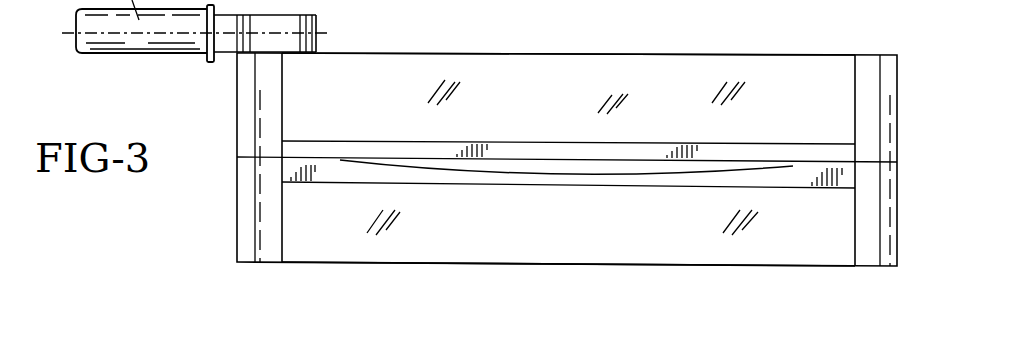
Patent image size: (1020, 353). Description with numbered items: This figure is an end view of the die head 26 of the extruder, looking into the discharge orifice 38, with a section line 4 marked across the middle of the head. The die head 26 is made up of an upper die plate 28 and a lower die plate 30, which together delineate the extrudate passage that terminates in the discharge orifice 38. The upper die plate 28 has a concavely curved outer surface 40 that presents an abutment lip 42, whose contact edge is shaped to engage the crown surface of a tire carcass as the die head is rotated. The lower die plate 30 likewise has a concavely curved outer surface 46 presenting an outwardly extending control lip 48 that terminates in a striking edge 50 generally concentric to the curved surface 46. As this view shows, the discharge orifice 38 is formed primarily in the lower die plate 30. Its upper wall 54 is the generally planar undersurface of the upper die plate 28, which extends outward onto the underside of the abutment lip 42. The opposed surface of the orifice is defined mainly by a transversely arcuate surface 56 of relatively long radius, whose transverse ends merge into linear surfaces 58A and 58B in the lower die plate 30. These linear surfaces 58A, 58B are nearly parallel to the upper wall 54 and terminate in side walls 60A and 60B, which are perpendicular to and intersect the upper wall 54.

The section line 4- 4 is at (568, 300).
The die head 26 is at (192, 242).
The upper die plate 28 is at (797, 56).
The lower die plate 30 is at (810, 266).
The discharge orifice 38 is at (510, 168).
The outer surface 40 is at (425, 70).
The abutment lip 42 is at (661, 143).
The outer surface 46 is at (743, 252).
The control lip 48 is at (433, 184).
The striking edge 50 is at (668, 180).
The upper wall 54 is at (570, 160).
The arcuate surface 56 is at (605, 167).
The linear surface 58A is at (362, 182).
The linear surface 58B is at (779, 186).
The side wall 60A is at (350, 158).
The side wall 60B is at (793, 166).